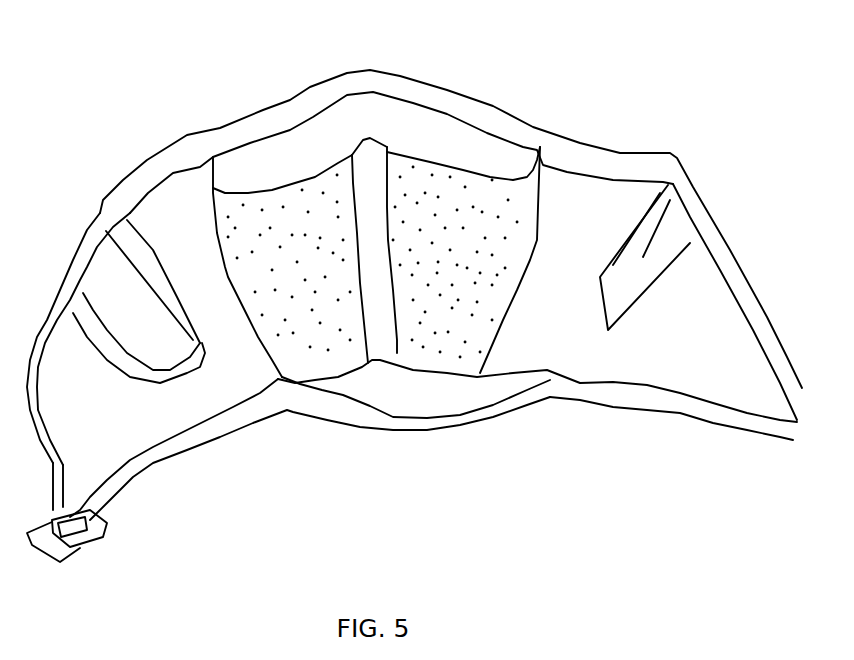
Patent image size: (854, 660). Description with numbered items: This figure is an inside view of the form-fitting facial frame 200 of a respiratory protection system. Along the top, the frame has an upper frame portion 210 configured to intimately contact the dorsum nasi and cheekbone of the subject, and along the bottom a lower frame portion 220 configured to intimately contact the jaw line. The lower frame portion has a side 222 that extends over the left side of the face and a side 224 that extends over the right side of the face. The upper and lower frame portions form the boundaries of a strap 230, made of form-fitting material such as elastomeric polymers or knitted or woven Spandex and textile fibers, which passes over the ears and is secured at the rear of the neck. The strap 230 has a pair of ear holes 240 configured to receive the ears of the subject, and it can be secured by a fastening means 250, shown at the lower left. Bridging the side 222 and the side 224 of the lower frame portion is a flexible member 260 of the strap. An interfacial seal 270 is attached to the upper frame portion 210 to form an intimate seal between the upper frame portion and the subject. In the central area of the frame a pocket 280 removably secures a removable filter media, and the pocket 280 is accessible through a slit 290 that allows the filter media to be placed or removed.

The form-fitting facial frame 200 is at (106, 122).
The upper frame portion 210 is at (250, 132).
The lower frame portion 220 is at (183, 435).
The side of the lower frame portion 222 is at (284, 429).
The side of the lower frame portion 224 is at (560, 419).
The strap 230 is at (563, 247).
The ear holes 240 is at (128, 308).
The fastening means 250 is at (93, 537).
The flexible member 260 is at (450, 418).
The interfacial seal 270 is at (422, 122).
The pocket 280 is at (320, 230).
The slit 290 is at (380, 322).